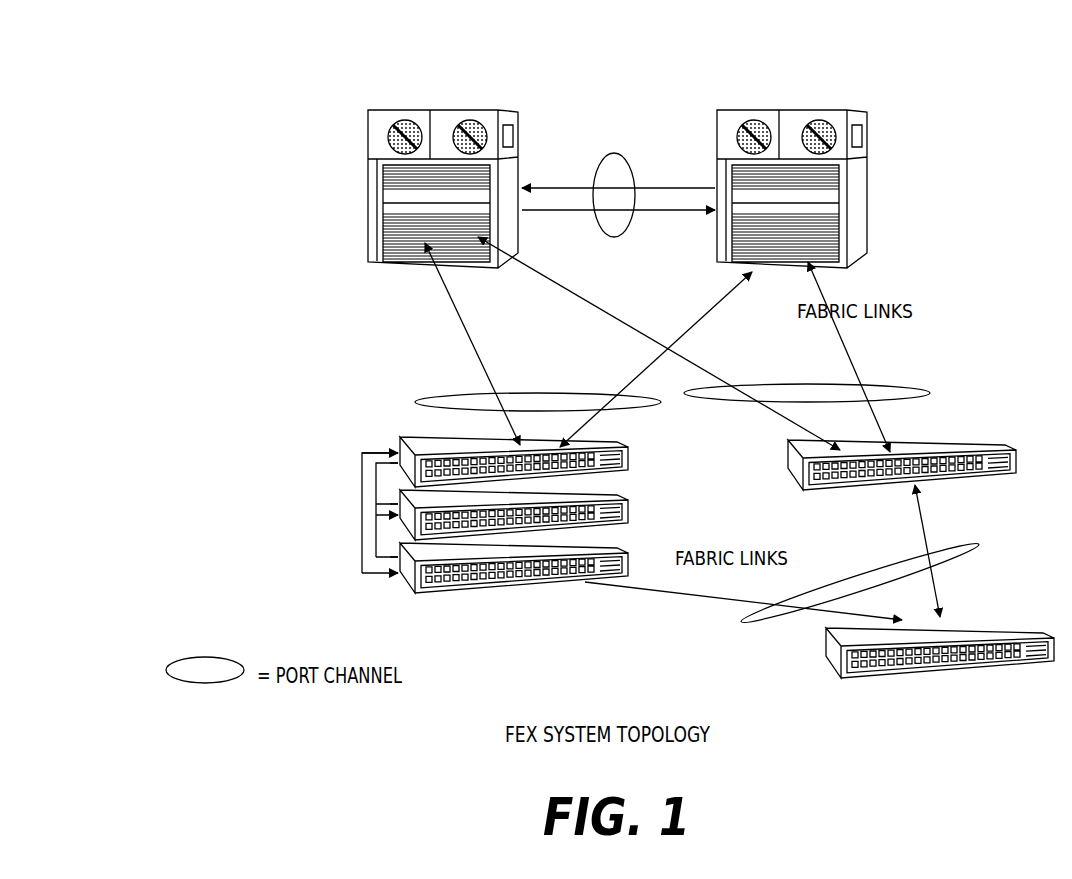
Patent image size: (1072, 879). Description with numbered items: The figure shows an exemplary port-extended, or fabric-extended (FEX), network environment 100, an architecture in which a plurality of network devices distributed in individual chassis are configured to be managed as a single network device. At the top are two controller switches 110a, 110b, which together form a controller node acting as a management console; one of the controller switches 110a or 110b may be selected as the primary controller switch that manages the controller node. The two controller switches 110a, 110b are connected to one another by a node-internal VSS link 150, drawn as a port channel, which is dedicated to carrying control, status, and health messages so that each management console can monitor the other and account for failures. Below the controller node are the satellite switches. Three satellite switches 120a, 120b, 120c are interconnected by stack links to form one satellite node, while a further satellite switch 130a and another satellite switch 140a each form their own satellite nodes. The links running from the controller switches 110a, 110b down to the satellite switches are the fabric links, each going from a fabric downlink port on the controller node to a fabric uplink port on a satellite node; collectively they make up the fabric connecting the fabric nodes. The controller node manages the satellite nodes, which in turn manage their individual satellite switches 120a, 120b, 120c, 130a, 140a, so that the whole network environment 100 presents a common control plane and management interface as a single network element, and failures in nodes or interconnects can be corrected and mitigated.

The port-extended network environment 100 is at (245, 90).
The controller switch 110a is at (420, 110).
The controller switch 110b is at (763, 110).
The VSS link 150 is at (614, 153).
The satellite switch 120a is at (418, 436).
The satellite switch 120b is at (405, 490).
The satellite switch 120c is at (405, 543).
The satellite switch 130a is at (943, 438).
The satellite switch 140a is at (988, 626).